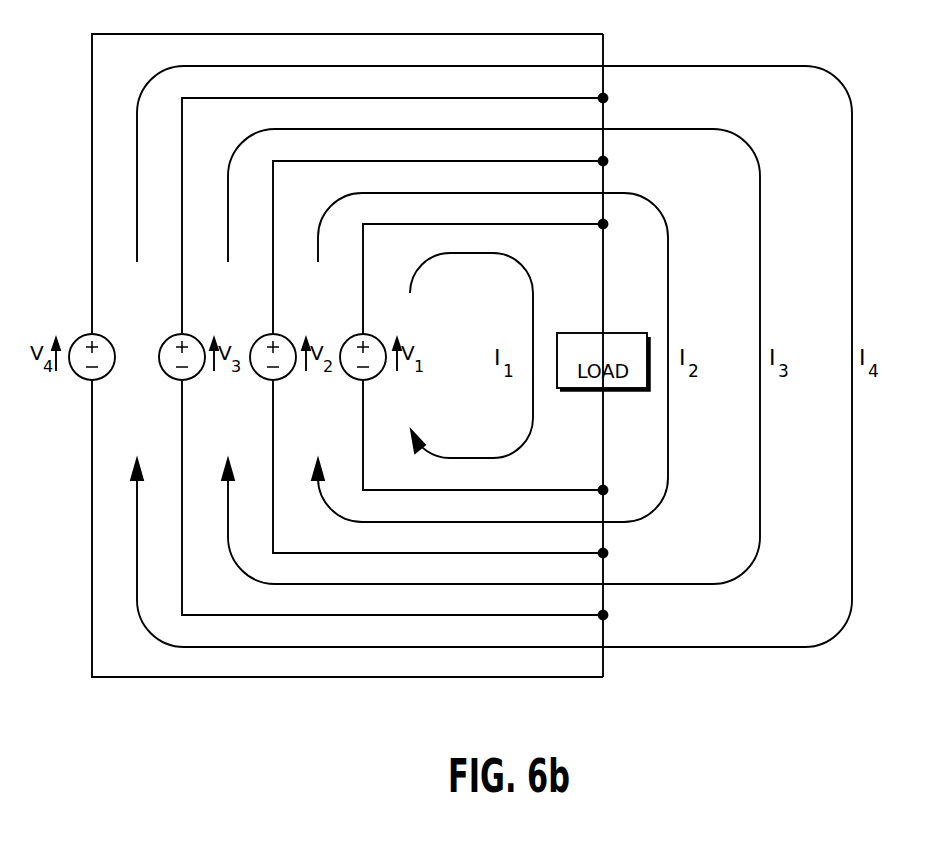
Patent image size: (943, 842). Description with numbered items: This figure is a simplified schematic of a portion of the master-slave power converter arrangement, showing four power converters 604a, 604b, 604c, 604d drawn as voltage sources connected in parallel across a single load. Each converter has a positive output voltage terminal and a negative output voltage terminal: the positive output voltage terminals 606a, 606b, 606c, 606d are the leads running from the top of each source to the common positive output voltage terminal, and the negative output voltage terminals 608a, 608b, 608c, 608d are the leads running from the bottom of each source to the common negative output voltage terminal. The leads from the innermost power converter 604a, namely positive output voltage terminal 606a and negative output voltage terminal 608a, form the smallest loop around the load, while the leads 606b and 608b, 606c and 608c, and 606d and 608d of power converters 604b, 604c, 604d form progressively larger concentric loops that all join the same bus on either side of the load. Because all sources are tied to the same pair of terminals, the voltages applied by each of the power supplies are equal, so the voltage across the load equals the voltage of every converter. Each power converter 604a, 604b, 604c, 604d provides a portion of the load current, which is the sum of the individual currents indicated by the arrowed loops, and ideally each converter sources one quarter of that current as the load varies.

The power converter 604a is at (374, 376).
The power converter 604b is at (284, 376).
The power converter 604c is at (193, 376).
The power converter 604d is at (103, 376).
The positive output voltage terminal 606a is at (364, 313).
The positive output voltage terminal 606b is at (274, 285).
The positive output voltage terminal 606c is at (183, 285).
The positive output voltage terminal 606d is at (93, 285).
The negative output voltage terminal 608a is at (364, 418).
The negative output voltage terminal 608b is at (274, 441).
The negative output voltage terminal 608c is at (183, 441).
The negative output voltage terminal 608d is at (93, 441).